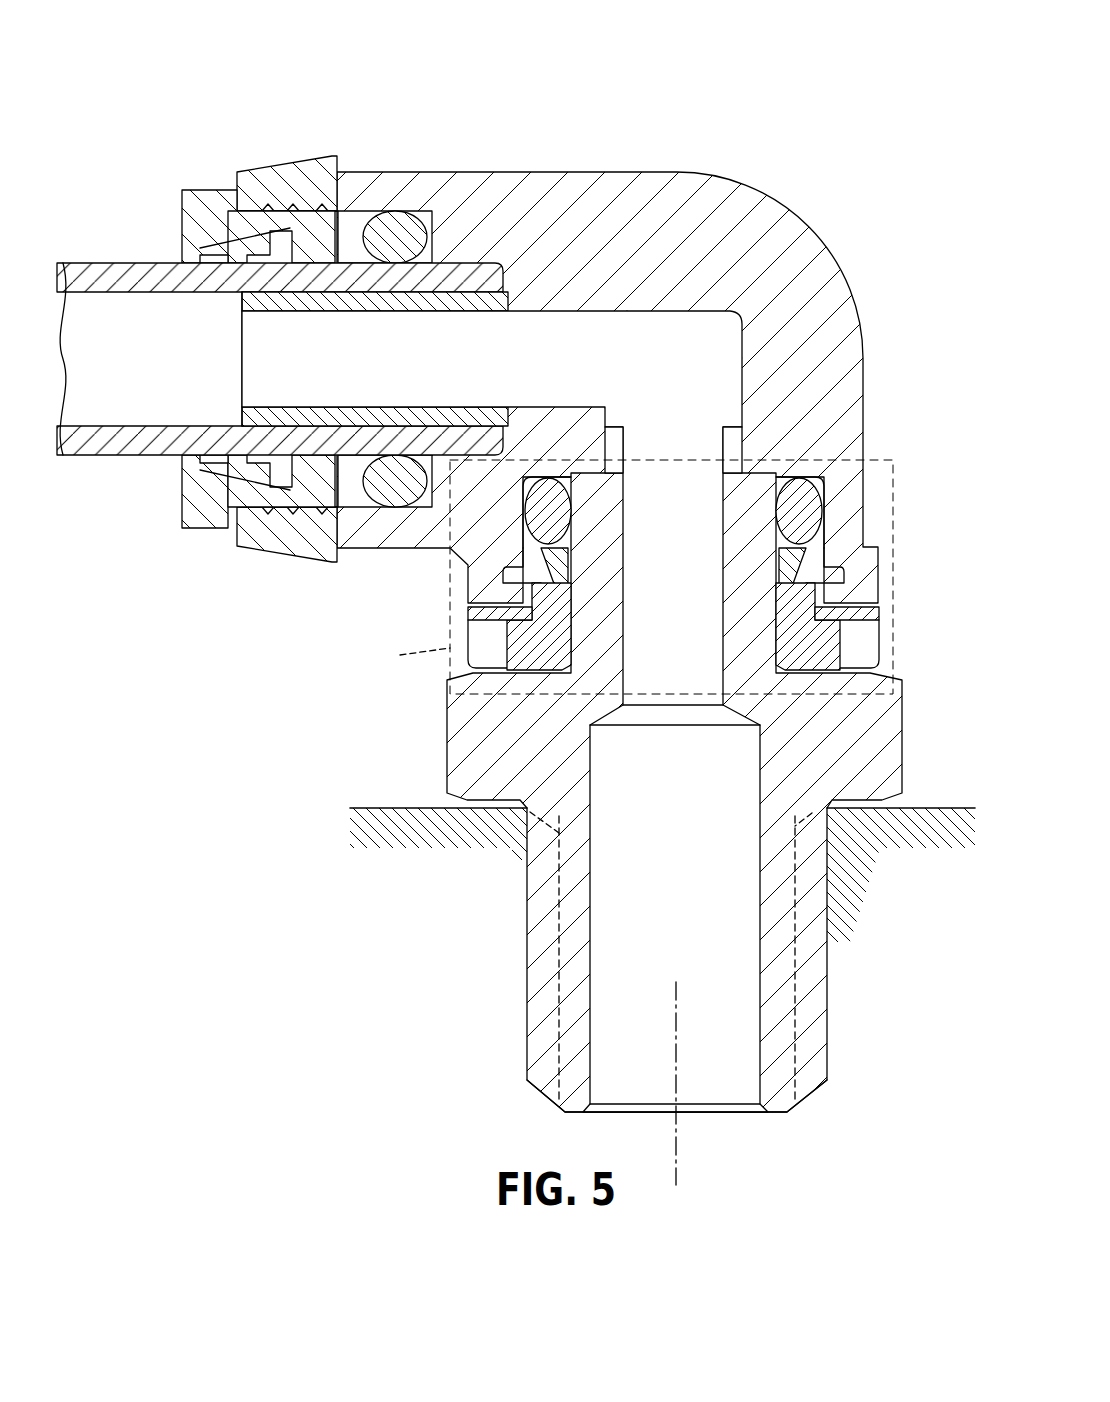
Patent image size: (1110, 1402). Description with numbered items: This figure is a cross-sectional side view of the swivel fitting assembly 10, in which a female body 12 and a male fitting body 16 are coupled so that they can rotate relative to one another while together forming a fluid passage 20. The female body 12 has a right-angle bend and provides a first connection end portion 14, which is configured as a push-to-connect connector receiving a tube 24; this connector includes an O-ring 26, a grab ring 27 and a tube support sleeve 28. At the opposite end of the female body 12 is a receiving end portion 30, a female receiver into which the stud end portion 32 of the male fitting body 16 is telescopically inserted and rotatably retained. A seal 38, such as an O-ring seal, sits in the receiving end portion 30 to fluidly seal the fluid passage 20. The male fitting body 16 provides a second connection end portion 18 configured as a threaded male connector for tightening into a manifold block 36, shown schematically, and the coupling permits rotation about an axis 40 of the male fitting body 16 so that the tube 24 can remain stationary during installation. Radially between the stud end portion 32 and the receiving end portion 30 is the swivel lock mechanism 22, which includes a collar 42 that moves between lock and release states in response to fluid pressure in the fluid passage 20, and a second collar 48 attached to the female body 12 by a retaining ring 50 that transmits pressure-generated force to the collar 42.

The swivel fitting assembly 10 is at (168, 80).
The female body 12 is at (602, 160).
The first connection end portion 14 is at (175, 257).
The male fitting body 16 is at (490, 745).
The second connection end portion 18 is at (741, 1118).
The fluid passage 20 is at (673, 332).
The swivel lock mechanism 22 is at (530, 580).
The tube 24 is at (132, 457).
The O-ring 26 is at (393, 237).
The grab ring 27 is at (277, 243).
The tube support sleeve 28 is at (228, 222).
The receiving end portion 30 is at (755, 483).
The stud end portion 32 is at (757, 508).
The manifold block 36 is at (950, 807).
The seal 38 is at (800, 510).
The axis 40 is at (678, 1160).
The collar 42 is at (803, 556).
The second collar 48 is at (797, 643).
The retaining ring 50 is at (873, 613).